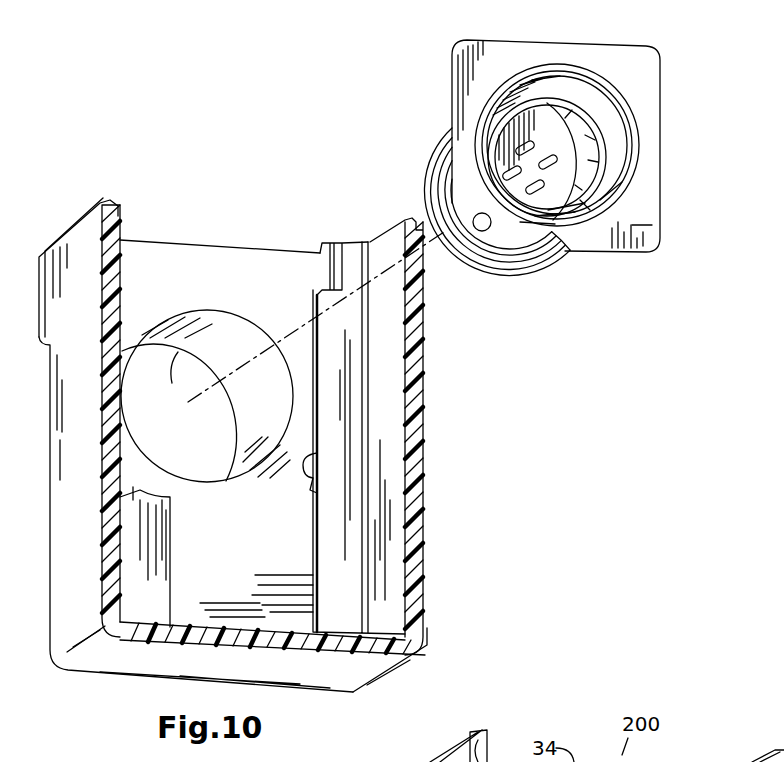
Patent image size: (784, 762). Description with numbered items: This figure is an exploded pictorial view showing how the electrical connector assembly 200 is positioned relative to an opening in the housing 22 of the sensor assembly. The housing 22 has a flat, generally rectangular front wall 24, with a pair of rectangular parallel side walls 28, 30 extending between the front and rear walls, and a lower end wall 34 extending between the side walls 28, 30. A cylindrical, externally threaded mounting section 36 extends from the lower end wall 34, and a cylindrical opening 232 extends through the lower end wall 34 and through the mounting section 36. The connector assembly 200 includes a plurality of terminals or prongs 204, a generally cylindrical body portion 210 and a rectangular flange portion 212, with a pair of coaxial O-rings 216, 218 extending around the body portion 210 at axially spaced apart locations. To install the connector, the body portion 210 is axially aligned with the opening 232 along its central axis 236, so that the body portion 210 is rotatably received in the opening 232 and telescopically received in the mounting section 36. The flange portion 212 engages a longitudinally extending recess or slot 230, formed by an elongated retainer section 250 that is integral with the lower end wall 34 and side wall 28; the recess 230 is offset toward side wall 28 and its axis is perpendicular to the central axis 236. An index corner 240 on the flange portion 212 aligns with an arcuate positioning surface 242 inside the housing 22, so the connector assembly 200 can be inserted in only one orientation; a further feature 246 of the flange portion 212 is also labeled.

The housing 22 is at (259, 449).
The front wall 24 is at (273, 665).
The side wall 28 is at (417, 490).
The side wall 30 is at (82, 535).
The lower end wall 34 is at (145, 260).
The mounting section 36 is at (195, 350).
The connector assembly 200 is at (539, 170).
The terminals or prongs 204 is at (535, 143).
The body portion 210 is at (434, 131).
The flange portion 212 is at (668, 80).
The O-ring 216 is at (532, 257).
The O-ring 218 is at (512, 273).
The recess or slot 230 is at (317, 470).
The cylindrical opening 232 is at (172, 383).
The central axis 236 is at (303, 333).
The index corner 240 is at (484, 231).
The arcuate positioning surface 242 is at (130, 490).
The plate edge 246 is at (638, 224).
The retainer section 250 is at (337, 353).